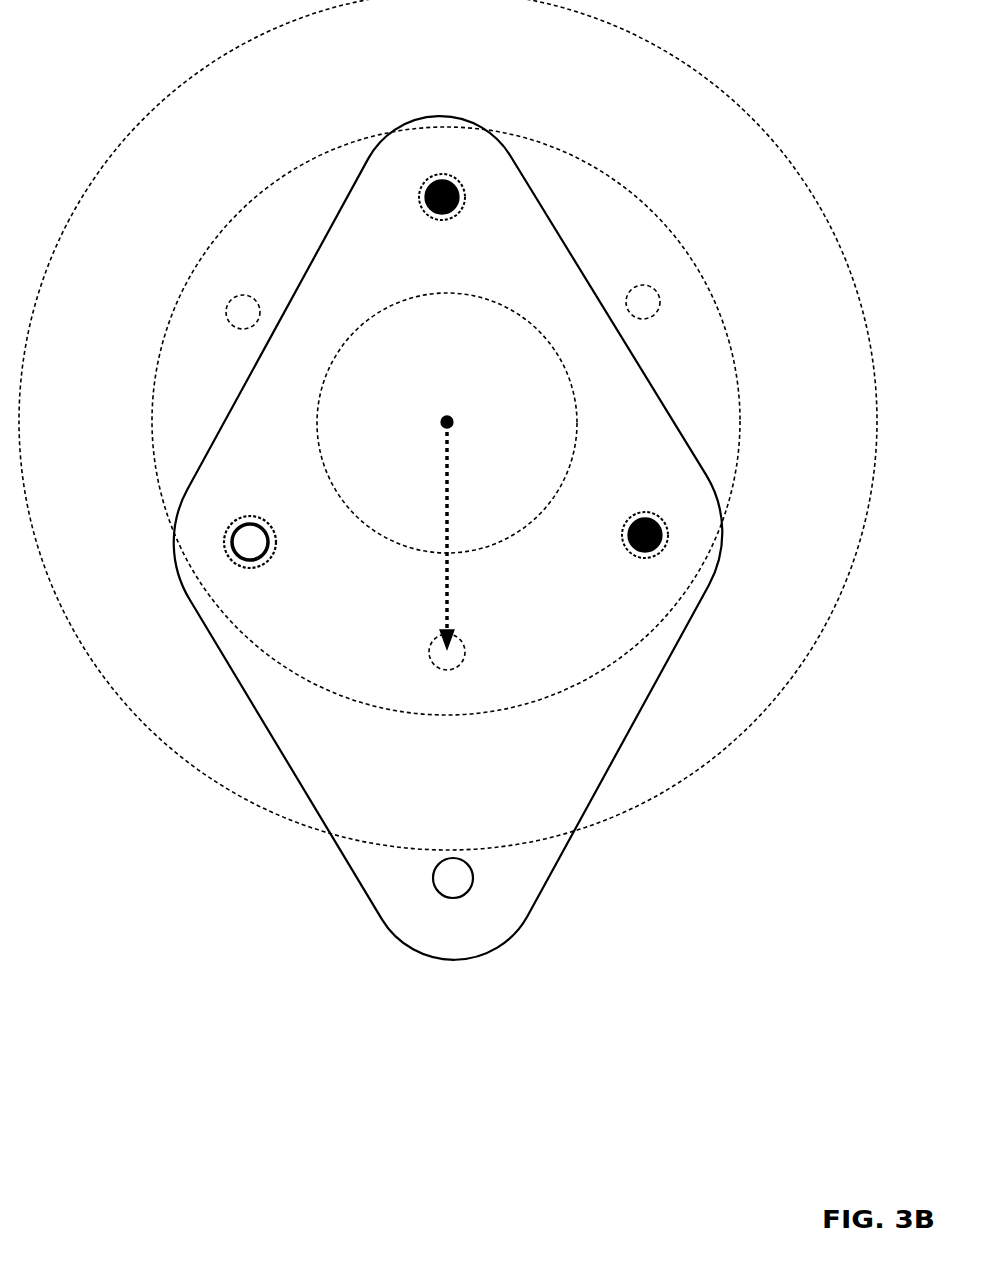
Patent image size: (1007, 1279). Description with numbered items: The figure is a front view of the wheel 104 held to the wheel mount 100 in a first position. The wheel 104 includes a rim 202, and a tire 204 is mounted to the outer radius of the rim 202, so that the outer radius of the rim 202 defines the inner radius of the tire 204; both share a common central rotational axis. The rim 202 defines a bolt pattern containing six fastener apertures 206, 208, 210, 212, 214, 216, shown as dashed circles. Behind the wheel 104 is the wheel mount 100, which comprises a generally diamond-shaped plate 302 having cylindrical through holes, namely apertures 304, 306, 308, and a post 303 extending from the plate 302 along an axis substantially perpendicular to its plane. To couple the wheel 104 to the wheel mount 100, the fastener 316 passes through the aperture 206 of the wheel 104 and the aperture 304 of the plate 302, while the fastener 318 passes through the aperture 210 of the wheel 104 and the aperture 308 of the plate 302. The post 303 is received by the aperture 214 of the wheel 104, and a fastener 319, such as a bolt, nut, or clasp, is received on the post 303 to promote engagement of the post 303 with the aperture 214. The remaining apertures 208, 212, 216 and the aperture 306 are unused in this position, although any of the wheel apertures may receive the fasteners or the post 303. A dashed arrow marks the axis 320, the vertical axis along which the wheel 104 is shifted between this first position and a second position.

The wheel mount 100 is at (331, 185).
The wheel 104 is at (184, 79).
The rim 202 is at (583, 162).
The tire 204 is at (790, 167).
The aperture 206 is at (453, 215).
The aperture 208 is at (643, 319).
The aperture 210 is at (637, 556).
The aperture 212 is at (437, 665).
The aperture 214 is at (272, 537).
The aperture 216 is at (248, 328).
The plate 302 is at (574, 256).
The post 303 is at (257, 565).
The aperture 304 is at (437, 215).
The aperture 306 is at (460, 858).
The aperture 308 is at (640, 513).
The fastener 316 is at (446, 178).
The fastener 318 is at (662, 556).
The fastener 319 is at (254, 520).
The axis 320 is at (440, 423).